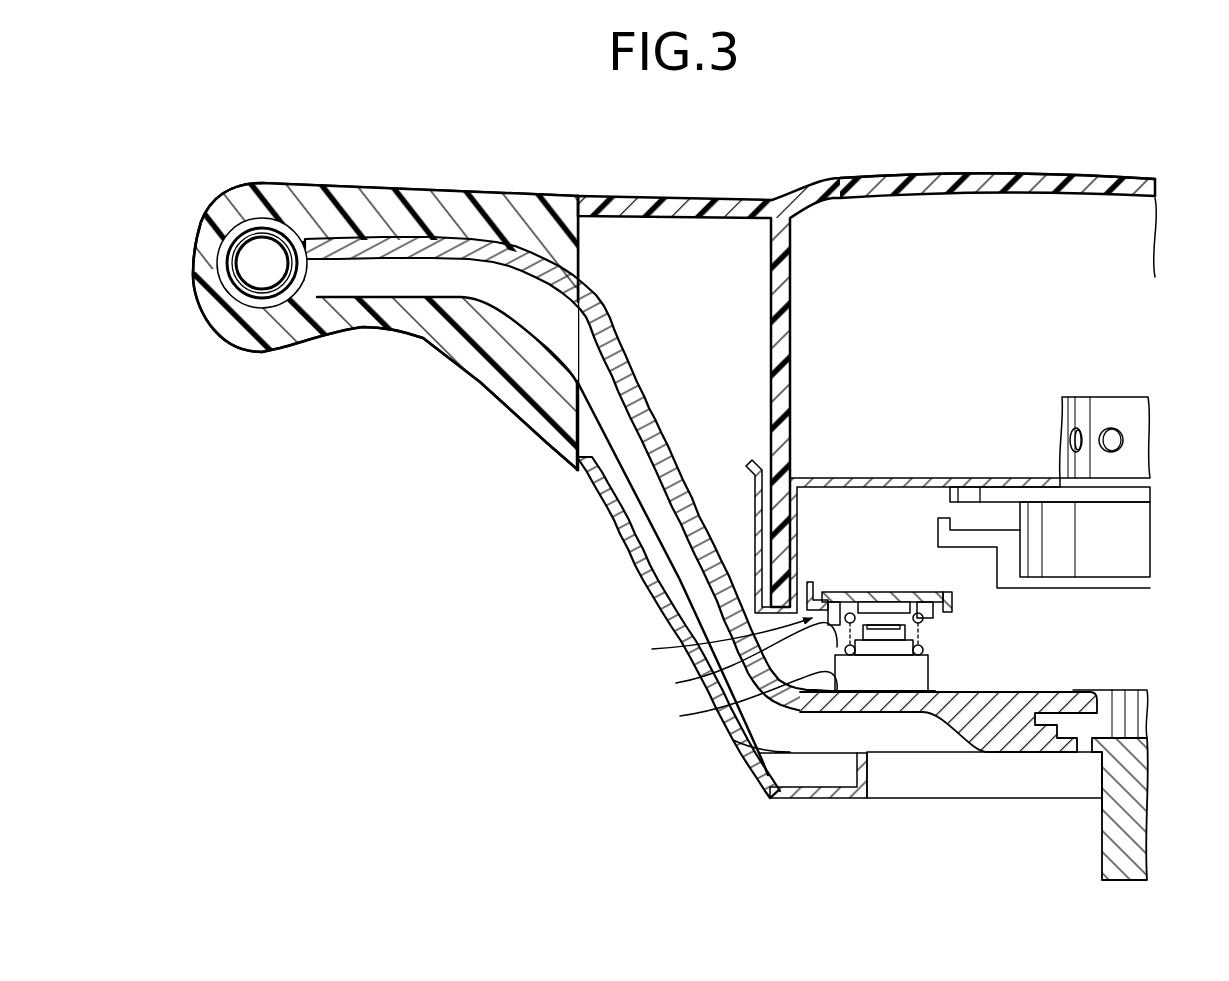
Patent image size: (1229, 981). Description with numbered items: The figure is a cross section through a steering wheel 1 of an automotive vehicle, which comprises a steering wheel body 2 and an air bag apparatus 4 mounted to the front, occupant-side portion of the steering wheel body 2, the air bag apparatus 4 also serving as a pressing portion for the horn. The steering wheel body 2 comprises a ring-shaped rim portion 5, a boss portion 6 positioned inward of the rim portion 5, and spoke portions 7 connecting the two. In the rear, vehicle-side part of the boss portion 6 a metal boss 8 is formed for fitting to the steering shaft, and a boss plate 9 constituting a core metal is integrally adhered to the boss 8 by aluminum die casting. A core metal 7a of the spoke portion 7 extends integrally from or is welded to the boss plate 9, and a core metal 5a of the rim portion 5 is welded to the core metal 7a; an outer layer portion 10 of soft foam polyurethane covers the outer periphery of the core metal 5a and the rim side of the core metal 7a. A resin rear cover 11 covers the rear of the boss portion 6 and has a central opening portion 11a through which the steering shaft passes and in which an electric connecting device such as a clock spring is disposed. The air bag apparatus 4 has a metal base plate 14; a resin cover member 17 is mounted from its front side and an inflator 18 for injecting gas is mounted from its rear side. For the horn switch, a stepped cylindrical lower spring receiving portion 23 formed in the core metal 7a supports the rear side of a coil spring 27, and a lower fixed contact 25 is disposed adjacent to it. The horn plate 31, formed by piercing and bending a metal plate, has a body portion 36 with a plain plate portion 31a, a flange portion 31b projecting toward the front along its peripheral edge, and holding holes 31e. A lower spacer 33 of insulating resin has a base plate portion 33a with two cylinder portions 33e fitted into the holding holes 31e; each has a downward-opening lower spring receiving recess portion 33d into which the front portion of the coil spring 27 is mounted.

The steering wheel 1 is at (1122, 142).
The steering wheel body 2 is at (1129, 815).
The air bag apparatus 4 is at (1041, 170).
The rim portion 5 is at (236, 190).
The core metal of the rim portion 5a is at (238, 300).
The boss portion 6 is at (1100, 832).
The spoke portion 7 is at (530, 428).
The core metal of the spoke portion 7a is at (688, 523).
The boss 8 is at (1100, 812).
The boss plate 9 is at (1075, 690).
The outer layer portion 10 is at (340, 186).
The rear cover 11 is at (825, 800).
The central opening portion 11a is at (915, 800).
The base plate 14 is at (887, 478).
The cover member 17 is at (950, 173).
The inflator 18 is at (1110, 396).
The lower spring receiving portion 23 is at (752, 738).
The lower fixed contact 25 is at (895, 660).
The coil spring 27 is at (925, 650).
The horn plate 31 is at (960, 605).
The plain plate portion 31a is at (872, 600).
The flange portion 31b is at (817, 590).
The holding hole 31e is at (958, 612).
The lower spacer 33 is at (712, 641).
The base plate portion 33a is at (892, 600).
The lower spring receiving recess portion 33d is at (727, 703).
The cylinder portion 33e is at (724, 661).
The body portion 36 is at (950, 606).